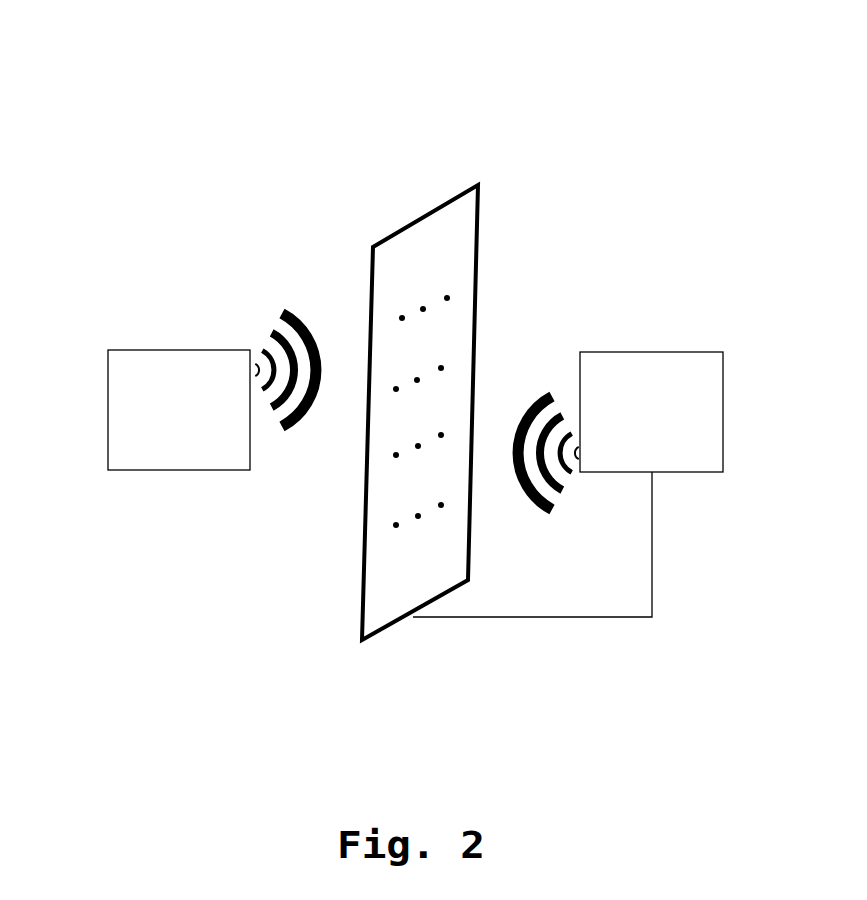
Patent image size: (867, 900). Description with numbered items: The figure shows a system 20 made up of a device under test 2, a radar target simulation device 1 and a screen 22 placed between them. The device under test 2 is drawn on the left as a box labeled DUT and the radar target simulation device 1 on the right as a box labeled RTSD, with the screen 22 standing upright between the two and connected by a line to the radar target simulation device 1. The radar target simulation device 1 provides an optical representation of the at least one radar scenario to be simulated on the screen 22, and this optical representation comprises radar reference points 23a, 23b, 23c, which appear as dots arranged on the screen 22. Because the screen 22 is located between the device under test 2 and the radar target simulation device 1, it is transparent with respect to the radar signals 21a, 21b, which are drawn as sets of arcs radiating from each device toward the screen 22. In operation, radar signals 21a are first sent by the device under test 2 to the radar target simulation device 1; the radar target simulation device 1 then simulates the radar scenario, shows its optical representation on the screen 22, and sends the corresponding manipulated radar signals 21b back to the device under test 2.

The system 20 is at (700, 75).
The device under test 2 is at (107, 410).
The radar target simulation device 1 is at (723, 412).
The radar signals 21a is at (285, 312).
The manipulated radar signals 21b is at (550, 392).
The screen 22 is at (480, 213).
The radar reference point 23a is at (396, 525).
The radar reference point 23b is at (418, 516).
The radar reference point 23c is at (441, 505).